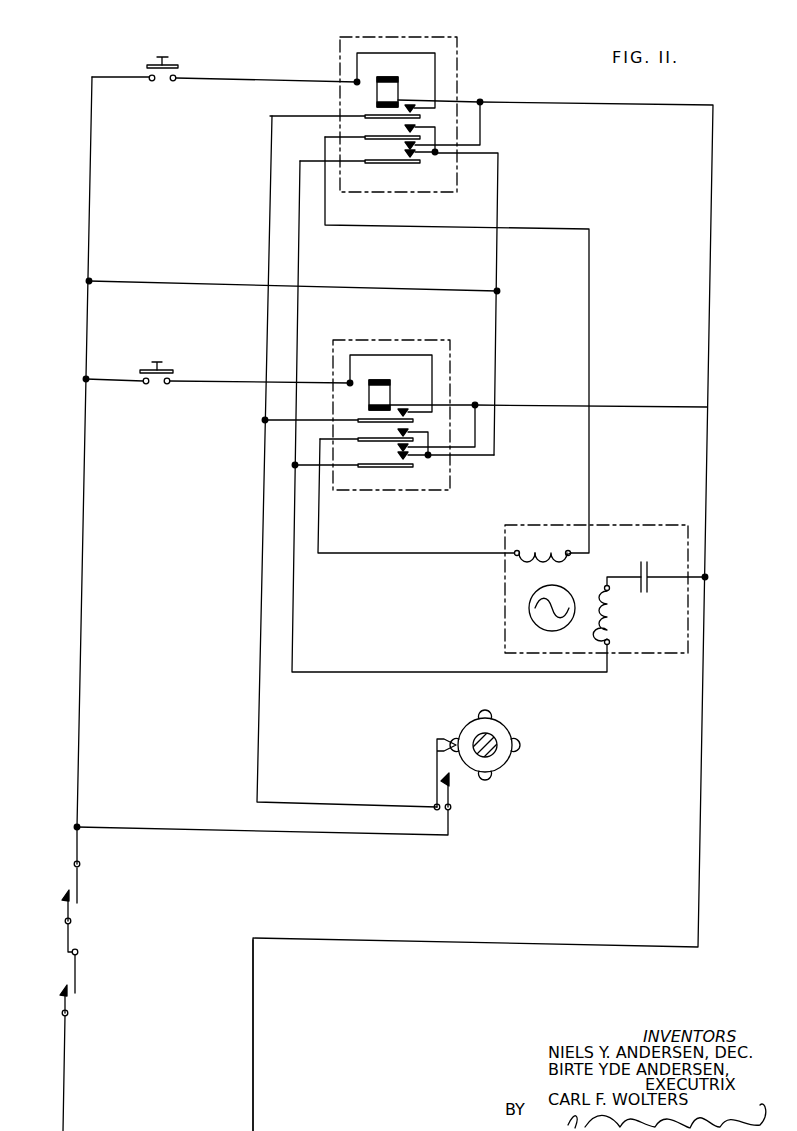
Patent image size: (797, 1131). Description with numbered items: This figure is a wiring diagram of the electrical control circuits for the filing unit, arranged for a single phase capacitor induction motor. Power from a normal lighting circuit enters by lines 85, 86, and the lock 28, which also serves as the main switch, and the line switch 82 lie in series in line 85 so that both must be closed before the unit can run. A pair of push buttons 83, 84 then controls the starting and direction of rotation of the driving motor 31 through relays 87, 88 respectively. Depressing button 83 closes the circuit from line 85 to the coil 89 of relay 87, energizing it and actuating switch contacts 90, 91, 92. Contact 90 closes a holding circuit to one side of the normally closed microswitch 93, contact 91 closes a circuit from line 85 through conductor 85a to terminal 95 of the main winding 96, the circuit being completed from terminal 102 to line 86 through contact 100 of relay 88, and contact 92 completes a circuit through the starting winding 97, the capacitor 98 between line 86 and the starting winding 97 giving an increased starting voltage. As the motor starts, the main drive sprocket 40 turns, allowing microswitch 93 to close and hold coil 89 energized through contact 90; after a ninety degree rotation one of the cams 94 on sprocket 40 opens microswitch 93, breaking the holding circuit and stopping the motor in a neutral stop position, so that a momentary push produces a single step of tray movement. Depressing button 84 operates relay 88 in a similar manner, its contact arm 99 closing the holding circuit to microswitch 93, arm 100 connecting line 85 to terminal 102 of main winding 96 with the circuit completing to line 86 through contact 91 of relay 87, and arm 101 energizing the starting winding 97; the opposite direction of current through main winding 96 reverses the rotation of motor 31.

The push button 84 is at (178, 62).
The relay 88 is at (457, 60).
The contact arm 99 is at (366, 114).
The contact arm 100 is at (366, 136).
The contact arm 101 is at (380, 163).
The line 85a is at (173, 280).
The push button 83 is at (168, 366).
The relay 87 is at (430, 340).
The coil 89 is at (384, 379).
The switch contact 90 is at (362, 418).
The switch contact 91 is at (360, 438).
The switch contact 92 is at (368, 467).
The driving motor 31 is at (633, 525).
The terminal 95 is at (517, 548).
The main winding 96 is at (549, 548).
The terminal 102 is at (569, 557).
The starting winding 97 is at (613, 615).
The capacitor 98 is at (652, 570).
The main drive sprocket 40 is at (507, 725).
The microswitch 93 is at (433, 772).
The cams 94 is at (490, 783).
The line switch 82 is at (60, 888).
The lock 28 is at (78, 970).
The line 85 is at (67, 1088).
The line 86 is at (253, 1097).